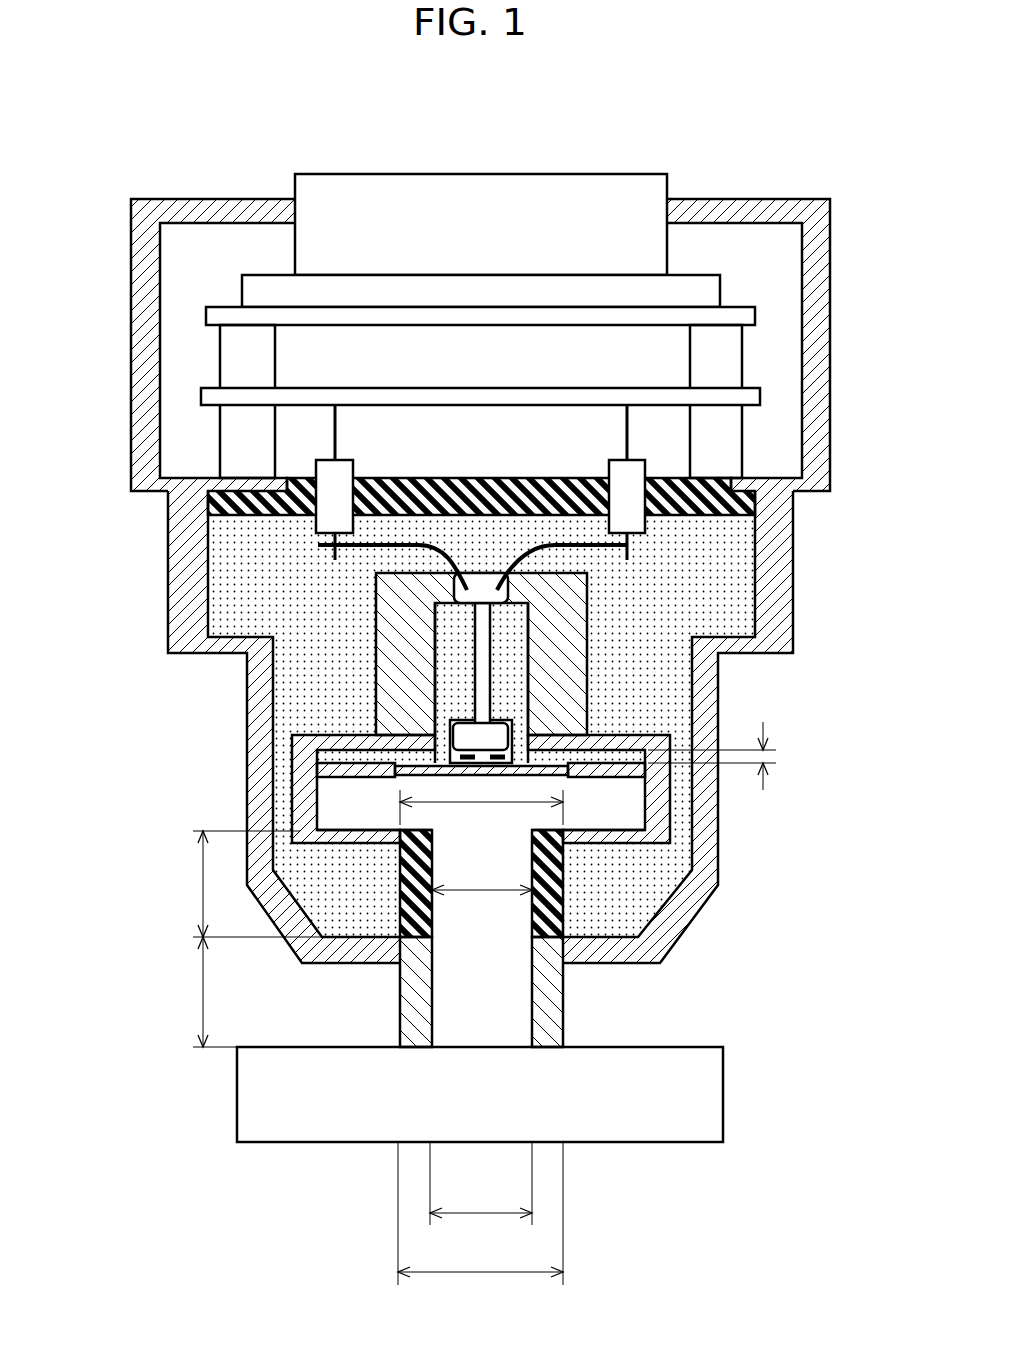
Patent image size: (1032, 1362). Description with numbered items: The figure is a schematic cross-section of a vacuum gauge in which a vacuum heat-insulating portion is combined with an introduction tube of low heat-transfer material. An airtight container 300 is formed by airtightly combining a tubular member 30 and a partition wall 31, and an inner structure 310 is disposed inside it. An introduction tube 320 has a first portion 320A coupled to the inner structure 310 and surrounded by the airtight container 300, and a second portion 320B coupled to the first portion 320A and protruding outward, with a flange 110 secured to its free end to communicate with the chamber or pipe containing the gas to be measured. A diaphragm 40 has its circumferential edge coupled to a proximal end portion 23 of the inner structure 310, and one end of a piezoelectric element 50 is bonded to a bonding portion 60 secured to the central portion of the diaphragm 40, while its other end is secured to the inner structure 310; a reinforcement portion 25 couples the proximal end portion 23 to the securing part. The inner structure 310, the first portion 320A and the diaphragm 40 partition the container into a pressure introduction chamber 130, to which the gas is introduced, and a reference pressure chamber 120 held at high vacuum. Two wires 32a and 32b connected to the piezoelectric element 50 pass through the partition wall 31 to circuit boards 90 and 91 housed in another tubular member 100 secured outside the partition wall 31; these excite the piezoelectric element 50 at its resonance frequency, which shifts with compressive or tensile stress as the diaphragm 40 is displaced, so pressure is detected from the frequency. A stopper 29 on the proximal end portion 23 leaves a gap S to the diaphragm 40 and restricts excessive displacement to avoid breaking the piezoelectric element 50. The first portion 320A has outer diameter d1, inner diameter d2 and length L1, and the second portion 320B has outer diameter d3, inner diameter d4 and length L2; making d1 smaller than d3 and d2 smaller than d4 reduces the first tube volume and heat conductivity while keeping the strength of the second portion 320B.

The tubular member 100 is at (130, 341).
The reference pressure chamber 120 is at (733, 537).
The partition wall 31 is at (262, 510).
The tubular member 30 is at (170, 598).
The wire 32a is at (318, 548).
The wire 32b is at (632, 549).
The reinforcement portion 25 is at (390, 675).
The piezoelectric element 50 is at (482, 702).
The bonding portion 60 is at (508, 718).
The stopper 29 is at (557, 742).
The airtight container 300 is at (451, 767).
The inner structure 310 is at (297, 808).
The introduction tube 320 is at (536, 938).
The first portion 320A is at (547, 888).
The second portion 320B is at (547, 1016).
The pressure introduction chamber 130 is at (498, 984).
The flange 110 is at (653, 1143).
The diaphragm 40 is at (566, 777).
The proximal end portion 23 is at (663, 803).
The circuit board 90 is at (761, 396).
The circuit board 91 is at (756, 316).
The outer diameter of first portion d1 is at (481, 801).
The inner diameter of first portion d2 is at (482, 881).
The outer diameter of second portion d3 is at (480, 1213).
The inner diameter of second portion d4 is at (481, 1183).
The length of first portion L1 is at (246, 884).
The length of second portion L2 is at (203, 992).
The gap S is at (721, 756).